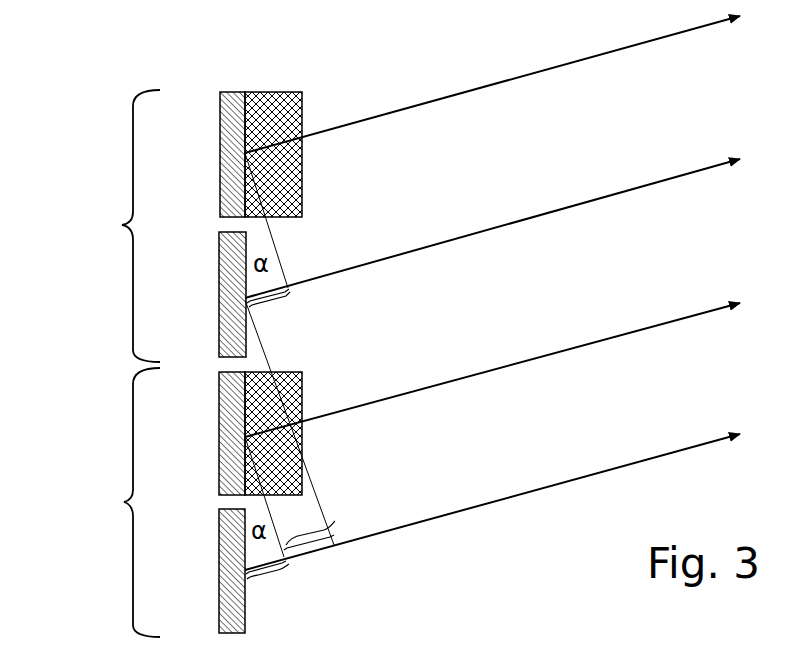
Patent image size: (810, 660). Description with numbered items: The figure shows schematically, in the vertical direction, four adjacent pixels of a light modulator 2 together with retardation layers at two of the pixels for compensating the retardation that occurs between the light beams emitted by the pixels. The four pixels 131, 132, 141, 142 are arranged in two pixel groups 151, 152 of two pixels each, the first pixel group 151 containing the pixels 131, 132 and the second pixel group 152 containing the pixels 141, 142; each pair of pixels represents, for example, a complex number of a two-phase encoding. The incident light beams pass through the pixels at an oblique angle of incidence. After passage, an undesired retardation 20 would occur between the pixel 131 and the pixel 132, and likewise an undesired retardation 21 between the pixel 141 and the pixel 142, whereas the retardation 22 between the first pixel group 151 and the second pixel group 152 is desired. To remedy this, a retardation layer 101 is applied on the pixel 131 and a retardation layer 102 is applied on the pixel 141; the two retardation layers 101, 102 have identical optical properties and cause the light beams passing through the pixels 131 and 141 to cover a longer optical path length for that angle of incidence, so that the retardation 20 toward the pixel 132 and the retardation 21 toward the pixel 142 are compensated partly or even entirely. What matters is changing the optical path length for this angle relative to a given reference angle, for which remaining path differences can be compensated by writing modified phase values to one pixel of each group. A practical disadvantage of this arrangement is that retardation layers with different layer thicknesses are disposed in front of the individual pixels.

The multilayer optical device 2 is at (233, 82).
The pixel 131 is at (232, 117).
The retardation layer 101 is at (285, 105).
The pixel 132 is at (228, 258).
The retardation 20 is at (267, 300).
The pixel 141 is at (230, 392).
The retardation layer 102 is at (295, 392).
The pixel 142 is at (230, 534).
The retardation 22 is at (323, 530).
The retardation 21 is at (270, 578).
The pixel group 151 is at (122, 225).
The pixel group 152 is at (124, 502).